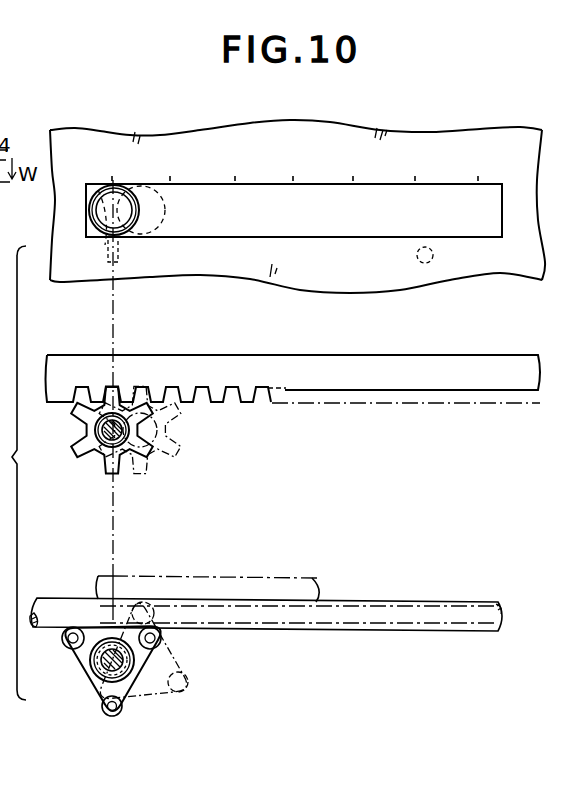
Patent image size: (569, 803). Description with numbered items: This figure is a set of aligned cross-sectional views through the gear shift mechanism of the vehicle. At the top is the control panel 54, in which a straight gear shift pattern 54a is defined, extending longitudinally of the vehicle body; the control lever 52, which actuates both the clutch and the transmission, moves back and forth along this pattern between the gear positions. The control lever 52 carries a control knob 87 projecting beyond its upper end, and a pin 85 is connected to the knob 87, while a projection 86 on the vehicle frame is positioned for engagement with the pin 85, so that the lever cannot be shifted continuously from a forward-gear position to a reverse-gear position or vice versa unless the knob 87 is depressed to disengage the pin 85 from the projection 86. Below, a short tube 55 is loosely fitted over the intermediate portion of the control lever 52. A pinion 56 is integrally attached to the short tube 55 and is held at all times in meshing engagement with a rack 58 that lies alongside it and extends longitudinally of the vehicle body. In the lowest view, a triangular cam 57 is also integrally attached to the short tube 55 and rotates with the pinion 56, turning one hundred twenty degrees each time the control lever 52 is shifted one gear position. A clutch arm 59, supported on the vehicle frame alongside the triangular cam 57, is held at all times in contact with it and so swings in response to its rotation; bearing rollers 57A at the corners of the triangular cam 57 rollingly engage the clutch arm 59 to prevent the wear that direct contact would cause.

The control lever 52 is at (100, 193).
The control panel 54 is at (522, 143).
The gear shift pattern 54a is at (310, 228).
The short tube 55 is at (94, 430).
The pinion 56 is at (83, 452).
The triangular cam 57 is at (130, 704).
The bearing rollers 57A is at (112, 717).
The rack 58 is at (216, 394).
The clutch arm 59 is at (285, 624).
The pin 85 is at (118, 250).
The projection 86 is at (430, 262).
The control knob 87 is at (105, 214).